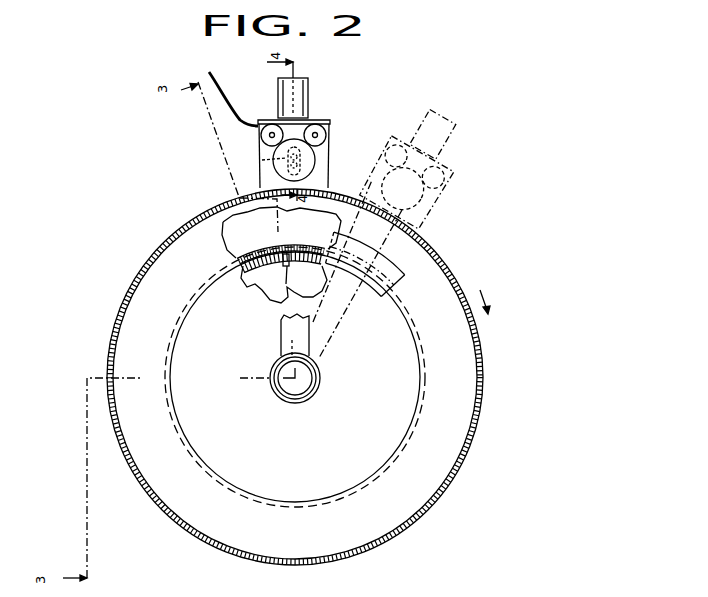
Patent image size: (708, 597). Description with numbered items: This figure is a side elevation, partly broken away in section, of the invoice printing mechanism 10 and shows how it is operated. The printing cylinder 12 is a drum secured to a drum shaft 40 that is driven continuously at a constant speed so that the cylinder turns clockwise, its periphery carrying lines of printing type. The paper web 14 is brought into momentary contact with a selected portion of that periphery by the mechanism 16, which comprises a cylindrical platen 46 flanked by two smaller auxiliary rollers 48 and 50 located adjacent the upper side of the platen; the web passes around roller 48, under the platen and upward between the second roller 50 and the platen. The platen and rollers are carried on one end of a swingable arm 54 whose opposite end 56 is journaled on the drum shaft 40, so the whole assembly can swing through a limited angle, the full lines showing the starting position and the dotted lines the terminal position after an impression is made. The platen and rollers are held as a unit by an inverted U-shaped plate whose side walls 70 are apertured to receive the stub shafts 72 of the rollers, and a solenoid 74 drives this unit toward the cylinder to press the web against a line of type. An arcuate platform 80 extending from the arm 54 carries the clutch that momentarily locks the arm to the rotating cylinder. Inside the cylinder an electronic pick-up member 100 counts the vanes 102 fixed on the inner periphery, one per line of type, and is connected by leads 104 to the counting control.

The invoice printing mechanism 10 is at (72, 208).
The printing cylinder 12 is at (108, 334).
The paper web 14 is at (208, 72).
The web-contacting mechanism 16 is at (247, 88).
The drum shaft 40 is at (278, 397).
The cylindrical platen 46 is at (314, 163).
The auxiliary roller 48 is at (259, 143).
The auxiliary roller 50 is at (328, 140).
The swingable arm 54 is at (302, 343).
The arm end 56 is at (311, 399).
The side wall 70 is at (262, 160).
The stub shaft 72 is at (318, 135).
The solenoid 74 is at (308, 92).
The arcuate platform 80 is at (250, 282).
The electronic pick-up member 100 is at (268, 278).
The vane 102 is at (268, 240).
The leads 104 is at (289, 290).